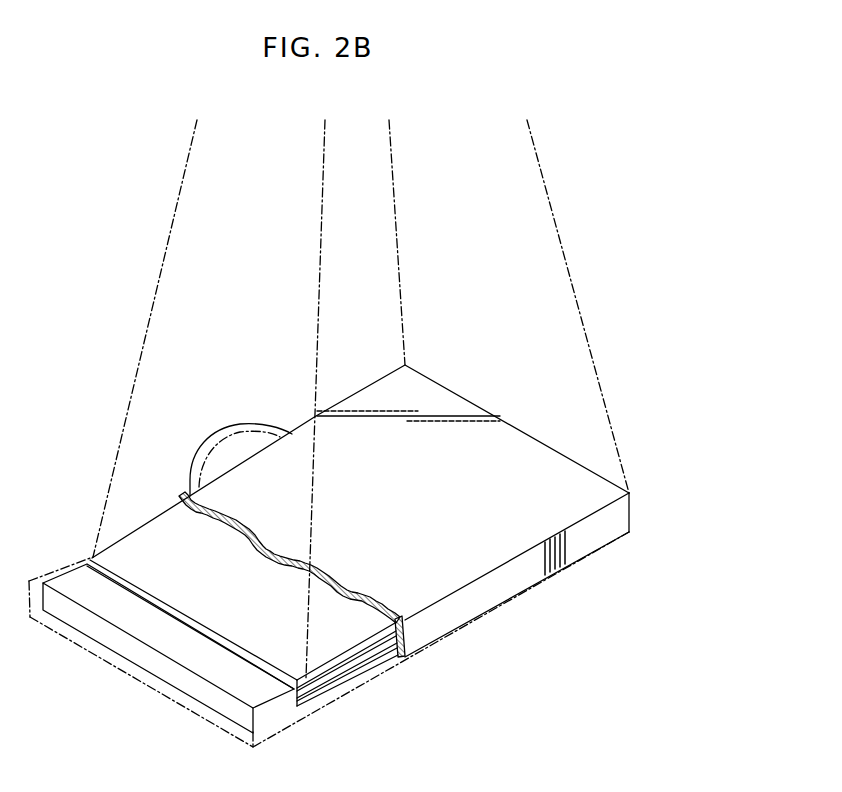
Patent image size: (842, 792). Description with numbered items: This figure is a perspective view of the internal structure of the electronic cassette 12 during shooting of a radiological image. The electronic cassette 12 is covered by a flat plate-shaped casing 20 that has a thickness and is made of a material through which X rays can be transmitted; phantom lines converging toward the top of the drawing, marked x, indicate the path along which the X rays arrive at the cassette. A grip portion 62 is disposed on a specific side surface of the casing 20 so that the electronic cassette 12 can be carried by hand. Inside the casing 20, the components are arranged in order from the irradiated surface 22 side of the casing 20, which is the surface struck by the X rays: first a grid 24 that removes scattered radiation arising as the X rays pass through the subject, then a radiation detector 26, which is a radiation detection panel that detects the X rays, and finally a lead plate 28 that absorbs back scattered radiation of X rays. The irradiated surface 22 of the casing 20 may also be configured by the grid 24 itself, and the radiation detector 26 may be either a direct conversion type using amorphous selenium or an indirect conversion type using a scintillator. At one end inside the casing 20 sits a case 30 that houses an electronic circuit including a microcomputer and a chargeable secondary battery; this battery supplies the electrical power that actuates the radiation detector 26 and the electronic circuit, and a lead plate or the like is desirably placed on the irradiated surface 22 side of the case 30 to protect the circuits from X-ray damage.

The X-ray irradiation path x is at (152, 309).
The electronic cassette 12 is at (363, 371).
The casing 20 is at (482, 598).
The irradiated surface 22 is at (546, 452).
The grid 24 is at (359, 608).
The radiation detector 26 is at (370, 653).
The lead plate 28 is at (343, 678).
The case 30 is at (270, 717).
The grip portion 62 is at (226, 428).